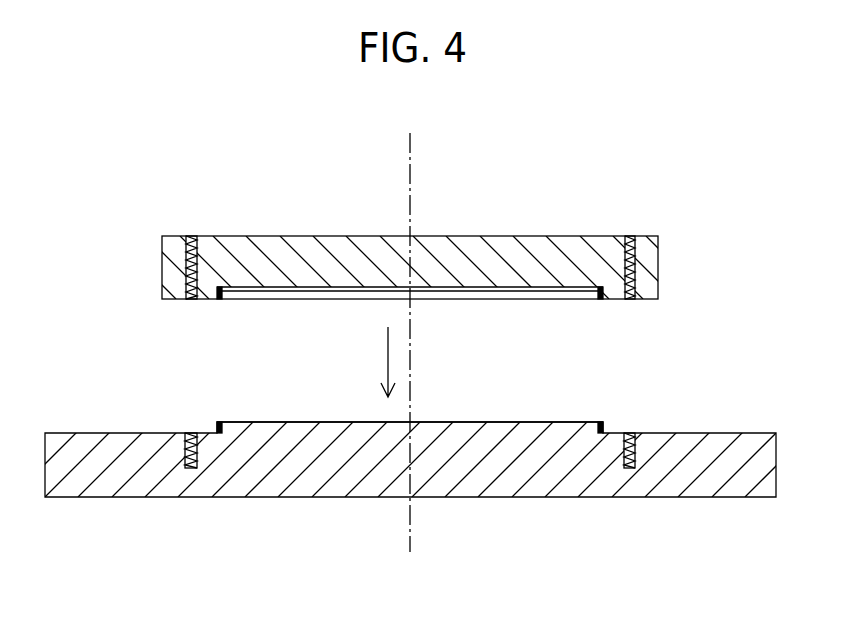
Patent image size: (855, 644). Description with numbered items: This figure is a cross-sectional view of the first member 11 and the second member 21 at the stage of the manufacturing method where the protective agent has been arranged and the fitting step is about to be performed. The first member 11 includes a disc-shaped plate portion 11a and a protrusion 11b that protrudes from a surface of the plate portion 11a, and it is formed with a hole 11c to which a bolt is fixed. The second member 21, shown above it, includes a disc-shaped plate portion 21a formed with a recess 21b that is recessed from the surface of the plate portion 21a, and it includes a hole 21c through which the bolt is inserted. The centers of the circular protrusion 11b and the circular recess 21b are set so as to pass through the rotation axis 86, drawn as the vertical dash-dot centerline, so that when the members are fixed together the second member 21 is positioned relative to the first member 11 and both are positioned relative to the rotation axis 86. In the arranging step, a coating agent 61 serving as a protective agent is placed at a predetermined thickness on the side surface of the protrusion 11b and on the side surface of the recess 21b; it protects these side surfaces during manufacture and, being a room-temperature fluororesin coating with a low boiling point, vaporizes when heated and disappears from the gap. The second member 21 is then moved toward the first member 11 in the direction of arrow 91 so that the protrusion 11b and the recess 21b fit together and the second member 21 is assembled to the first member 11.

The rotation axis 86 is at (410, 151).
The second member 21 is at (419, 208).
The plate portion 21a is at (527, 245).
The recess 21b is at (553, 288).
The hole 21c is at (638, 262).
The first member 11 is at (426, 516).
The plate portion 11a is at (657, 465).
The protrusion 11b is at (565, 436).
The hole 11c is at (637, 450).
The coating agent 61 is at (220, 300).
The arrow 91 is at (388, 355).